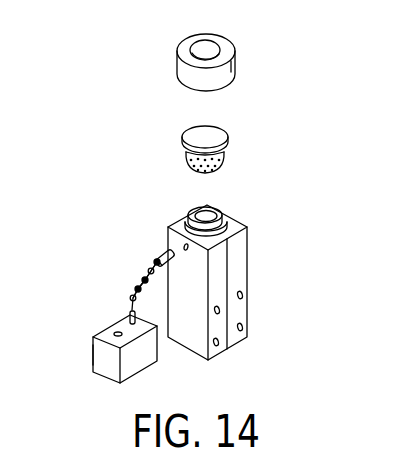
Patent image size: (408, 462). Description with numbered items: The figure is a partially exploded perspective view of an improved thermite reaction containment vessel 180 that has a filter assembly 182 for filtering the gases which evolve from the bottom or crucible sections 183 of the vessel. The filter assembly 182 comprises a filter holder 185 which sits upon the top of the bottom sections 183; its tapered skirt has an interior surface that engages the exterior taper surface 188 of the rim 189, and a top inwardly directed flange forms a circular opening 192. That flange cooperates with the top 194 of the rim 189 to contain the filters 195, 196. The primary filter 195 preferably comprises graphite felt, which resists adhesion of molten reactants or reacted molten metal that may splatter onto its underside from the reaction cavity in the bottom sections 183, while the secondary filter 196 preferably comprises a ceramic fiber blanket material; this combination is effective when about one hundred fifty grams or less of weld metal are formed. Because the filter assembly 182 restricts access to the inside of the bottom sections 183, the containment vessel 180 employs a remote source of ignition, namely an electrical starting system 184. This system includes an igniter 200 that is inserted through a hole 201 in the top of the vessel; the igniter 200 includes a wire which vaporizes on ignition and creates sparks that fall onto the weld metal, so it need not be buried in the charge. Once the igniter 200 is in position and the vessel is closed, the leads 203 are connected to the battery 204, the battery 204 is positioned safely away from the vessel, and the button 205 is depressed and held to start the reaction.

The thermite reaction containment vessel 180 is at (278, 148).
The filter assembly 182 is at (267, 52).
The bottom sections 183 is at (192, 340).
The electrical starting system 184 is at (94, 367).
The filter holder 185 is at (242, 50).
The exterior taper surface 188 is at (218, 223).
The rim 189 is at (226, 207).
The circular opening 192 is at (213, 45).
The top of rim 194 is at (207, 211).
The primary filter 195 is at (229, 161).
The secondary filter 196 is at (229, 134).
The igniter 200 is at (160, 256).
The hole 201 is at (170, 247).
The leads 203 is at (128, 302).
The battery 204 is at (93, 357).
The button 205 is at (118, 333).